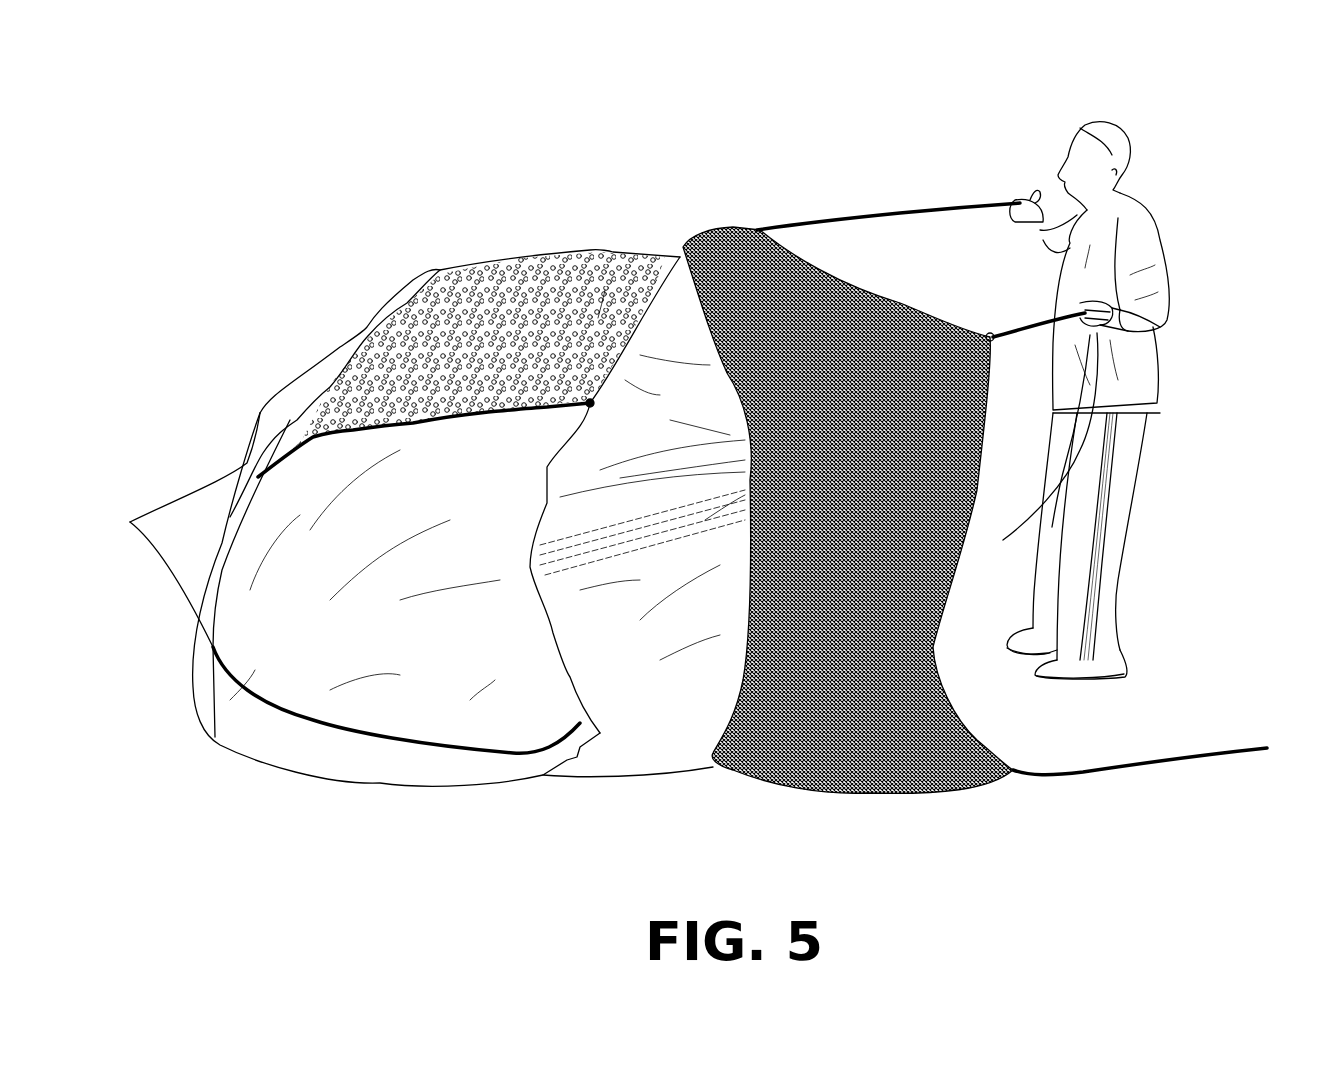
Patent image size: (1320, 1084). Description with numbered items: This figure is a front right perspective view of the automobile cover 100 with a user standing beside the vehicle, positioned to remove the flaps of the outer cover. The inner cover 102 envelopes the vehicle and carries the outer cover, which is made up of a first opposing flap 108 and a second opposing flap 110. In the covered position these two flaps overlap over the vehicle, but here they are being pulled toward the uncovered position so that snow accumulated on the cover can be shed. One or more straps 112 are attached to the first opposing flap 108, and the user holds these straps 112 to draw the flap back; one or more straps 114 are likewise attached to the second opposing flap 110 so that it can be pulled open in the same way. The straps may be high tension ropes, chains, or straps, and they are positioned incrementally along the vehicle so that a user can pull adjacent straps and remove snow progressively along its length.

The automobile cover 100 is at (1247, 108).
The inner cover 102 is at (637, 610).
The first opposing flap 108 is at (750, 252).
The second opposing flap 110 is at (480, 282).
The straps 112 is at (1010, 327).
The straps 114 is at (334, 583).